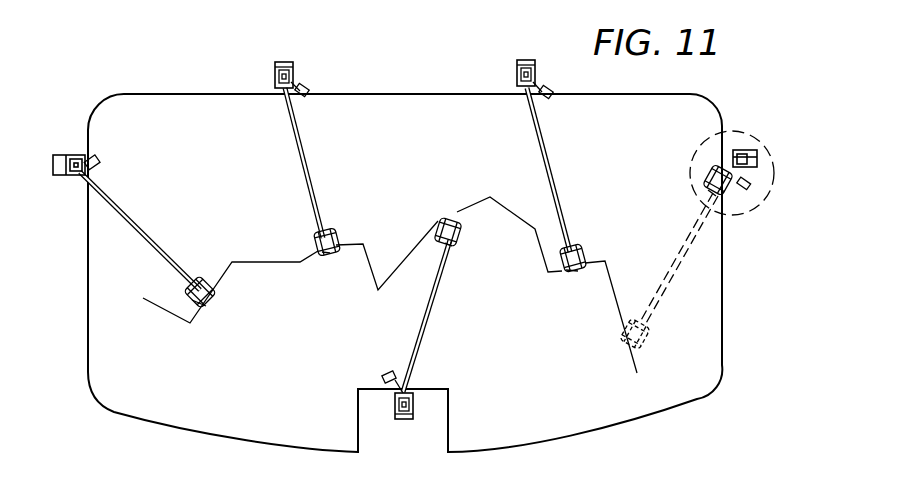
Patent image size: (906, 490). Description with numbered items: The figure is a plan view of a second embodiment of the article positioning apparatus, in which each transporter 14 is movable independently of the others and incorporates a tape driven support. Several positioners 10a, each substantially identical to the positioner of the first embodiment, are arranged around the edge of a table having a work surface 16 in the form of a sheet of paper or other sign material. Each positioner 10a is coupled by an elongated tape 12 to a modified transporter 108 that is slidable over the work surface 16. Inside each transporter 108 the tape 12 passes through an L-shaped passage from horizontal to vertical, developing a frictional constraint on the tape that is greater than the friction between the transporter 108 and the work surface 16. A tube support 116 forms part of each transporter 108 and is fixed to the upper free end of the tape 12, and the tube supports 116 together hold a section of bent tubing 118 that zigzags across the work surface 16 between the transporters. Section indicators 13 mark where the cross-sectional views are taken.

The positioner 10a is at (60, 153).
The elongated tape 12 is at (146, 209).
The section view indicator 13 is at (306, 208).
The transporter 14 is at (790, 167).
The work surface 16 is at (712, 277).
The modified transporter 108 is at (208, 284).
The tube support 116 is at (204, 303).
The bent tubing 118 is at (480, 203).